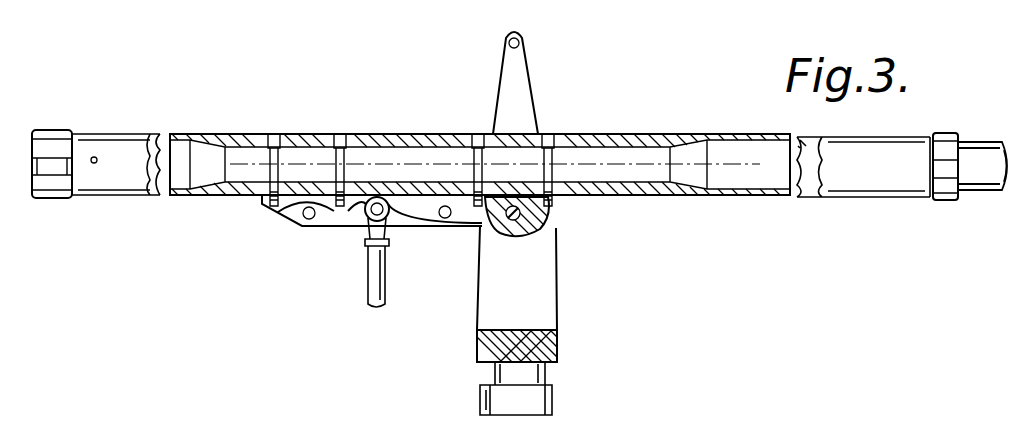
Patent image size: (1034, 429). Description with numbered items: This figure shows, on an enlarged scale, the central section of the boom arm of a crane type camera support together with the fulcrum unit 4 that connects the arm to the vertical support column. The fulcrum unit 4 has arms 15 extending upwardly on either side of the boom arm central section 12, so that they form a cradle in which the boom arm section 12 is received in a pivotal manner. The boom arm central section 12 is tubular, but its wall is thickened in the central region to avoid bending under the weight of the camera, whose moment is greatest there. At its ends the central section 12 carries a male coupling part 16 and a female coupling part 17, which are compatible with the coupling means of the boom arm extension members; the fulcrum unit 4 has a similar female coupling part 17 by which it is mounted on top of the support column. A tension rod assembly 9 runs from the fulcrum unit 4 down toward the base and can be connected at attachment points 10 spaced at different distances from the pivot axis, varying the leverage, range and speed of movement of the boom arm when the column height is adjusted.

The fulcrum unit 4 is at (527, 291).
The tension rod assembly 9 is at (376, 286).
The attachment points 10 is at (368, 219).
The boom arm central section 12 is at (620, 140).
The arms 15 is at (506, 78).
The male coupling part 16 is at (1005, 194).
The female coupling part 17 is at (54, 200).